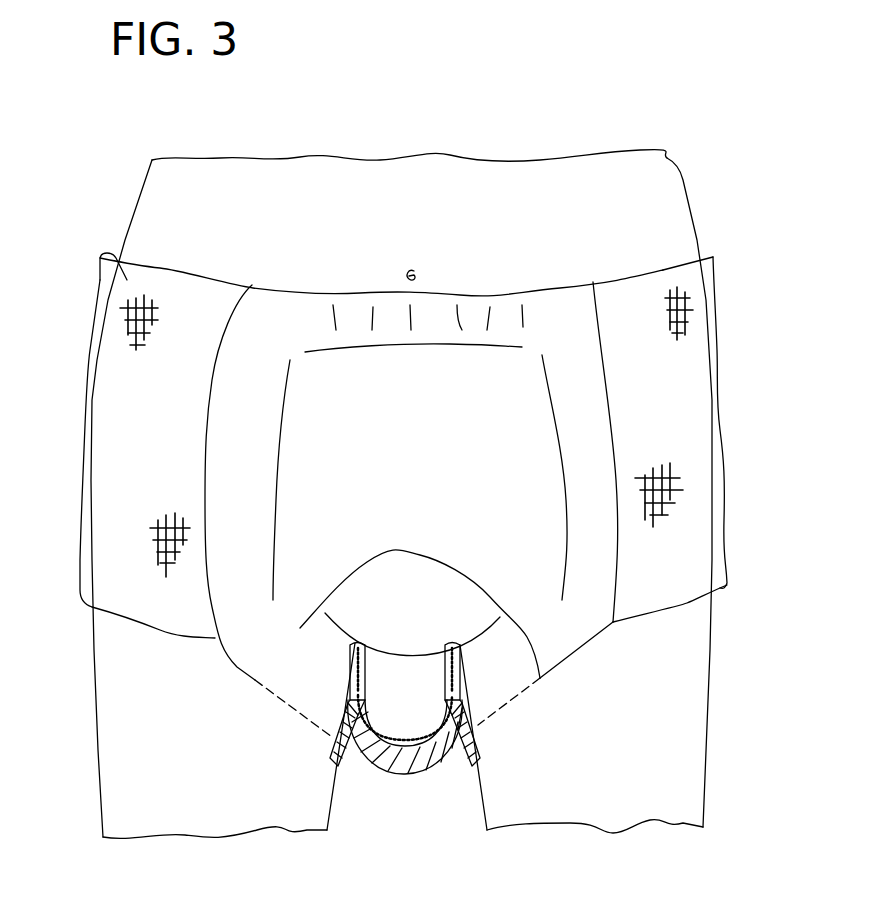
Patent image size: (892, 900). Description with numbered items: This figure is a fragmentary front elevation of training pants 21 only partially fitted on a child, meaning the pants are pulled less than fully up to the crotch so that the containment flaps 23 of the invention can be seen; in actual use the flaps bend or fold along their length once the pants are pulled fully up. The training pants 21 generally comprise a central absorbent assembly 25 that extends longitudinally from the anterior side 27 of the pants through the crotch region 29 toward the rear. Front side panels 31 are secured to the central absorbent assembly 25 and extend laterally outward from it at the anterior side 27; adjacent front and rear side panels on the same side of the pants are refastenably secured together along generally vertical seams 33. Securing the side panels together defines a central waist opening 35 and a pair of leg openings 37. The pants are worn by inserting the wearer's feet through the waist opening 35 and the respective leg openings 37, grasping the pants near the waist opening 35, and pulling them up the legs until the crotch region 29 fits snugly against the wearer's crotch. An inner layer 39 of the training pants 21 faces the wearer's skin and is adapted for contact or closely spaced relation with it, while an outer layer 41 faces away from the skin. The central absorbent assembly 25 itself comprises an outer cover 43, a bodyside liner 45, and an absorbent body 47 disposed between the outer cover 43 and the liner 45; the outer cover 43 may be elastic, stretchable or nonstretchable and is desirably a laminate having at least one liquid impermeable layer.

The training pants 21 is at (556, 248).
The containment flaps 23 is at (330, 687).
The central absorbent assembly 25 is at (303, 333).
The anterior side 27 is at (447, 445).
The crotch region 29 is at (573, 663).
The front side panels 31 is at (127, 280).
The seams 33 is at (84, 355).
The waist opening 35 is at (155, 266).
The leg openings 37 is at (126, 622).
The inner layer 39 is at (411, 720).
The outer layer 41 is at (402, 795).
The outer cover 43 is at (422, 770).
The bodyside liner 45 is at (383, 714).
The absorbent body 47 is at (382, 747).